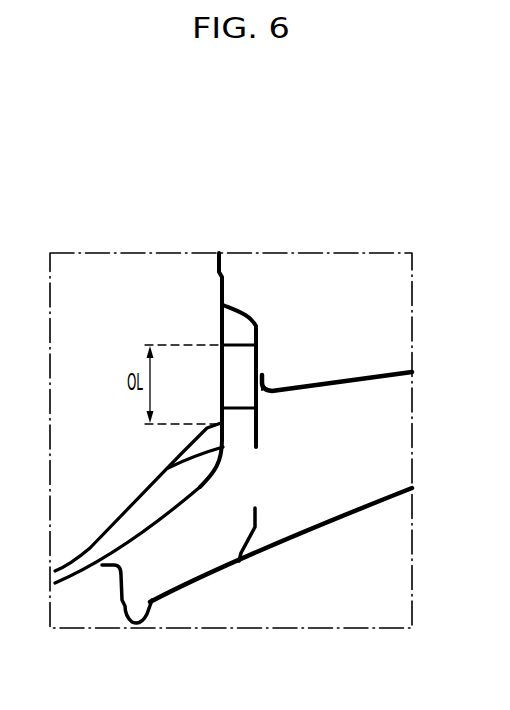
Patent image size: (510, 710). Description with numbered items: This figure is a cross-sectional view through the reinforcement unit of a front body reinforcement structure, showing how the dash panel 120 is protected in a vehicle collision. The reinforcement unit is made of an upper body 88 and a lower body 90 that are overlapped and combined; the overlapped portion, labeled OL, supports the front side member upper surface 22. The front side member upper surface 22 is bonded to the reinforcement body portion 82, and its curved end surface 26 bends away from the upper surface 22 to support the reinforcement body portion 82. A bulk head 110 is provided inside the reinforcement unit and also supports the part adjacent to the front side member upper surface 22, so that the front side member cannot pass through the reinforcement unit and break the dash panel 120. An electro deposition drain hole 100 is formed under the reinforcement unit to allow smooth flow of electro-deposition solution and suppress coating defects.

The front side member upper surface 22 is at (381, 372).
The end surface 26 is at (262, 375).
The reinforcement body portion 82 is at (258, 321).
The upper body 88 is at (246, 288).
The lower body 90 is at (232, 520).
The electro deposition drain hole 100 is at (253, 484).
The bulk head 110 is at (243, 396).
The dash panel 120 is at (151, 530).